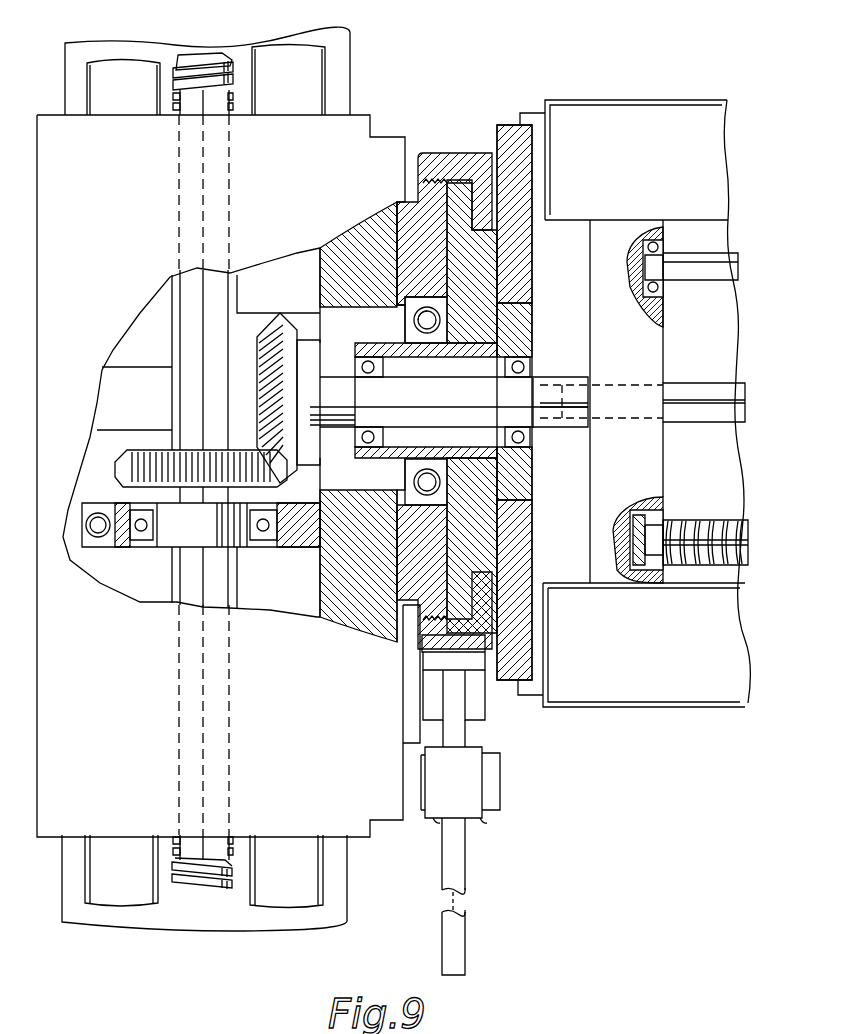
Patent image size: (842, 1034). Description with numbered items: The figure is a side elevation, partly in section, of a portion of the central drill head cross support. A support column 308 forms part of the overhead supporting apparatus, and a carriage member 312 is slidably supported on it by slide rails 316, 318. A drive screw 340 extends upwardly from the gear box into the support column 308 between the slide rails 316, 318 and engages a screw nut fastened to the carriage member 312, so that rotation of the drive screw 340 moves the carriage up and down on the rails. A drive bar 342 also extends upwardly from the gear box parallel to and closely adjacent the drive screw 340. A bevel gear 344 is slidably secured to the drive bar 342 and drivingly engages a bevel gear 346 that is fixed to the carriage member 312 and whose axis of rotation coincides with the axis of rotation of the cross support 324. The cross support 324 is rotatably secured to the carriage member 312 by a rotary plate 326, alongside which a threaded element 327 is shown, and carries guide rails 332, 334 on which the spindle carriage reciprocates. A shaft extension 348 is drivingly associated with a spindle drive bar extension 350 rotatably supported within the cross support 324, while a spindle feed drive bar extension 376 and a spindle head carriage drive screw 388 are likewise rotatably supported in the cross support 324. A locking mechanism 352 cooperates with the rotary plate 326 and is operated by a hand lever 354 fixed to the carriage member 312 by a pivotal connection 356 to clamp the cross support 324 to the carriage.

The support column 308 is at (237, 917).
The carriage member 312 is at (340, 140).
The slide rail 316 is at (310, 900).
The slide rail 318 is at (137, 900).
The cross support 324 is at (650, 490).
The rotary plate 326 is at (500, 130).
The threaded nut 327 is at (446, 182).
The guide rail 332 is at (622, 705).
The guide rail 334 is at (683, 112).
The drive screw 340 is at (212, 55).
The drive bar 342 is at (190, 840).
The bevel gear 344 is at (137, 470).
The bevel gear 346 is at (265, 338).
The shaft extension 348 is at (545, 385).
The spindle drive bar extension 350 is at (682, 390).
The locking mechanism 352 is at (460, 703).
The hand lever 354 is at (463, 917).
The pivotal connection 356 is at (445, 805).
The spindle feed drive bar extension 376 is at (735, 262).
The spindle head carriage drive screw 388 is at (738, 530).